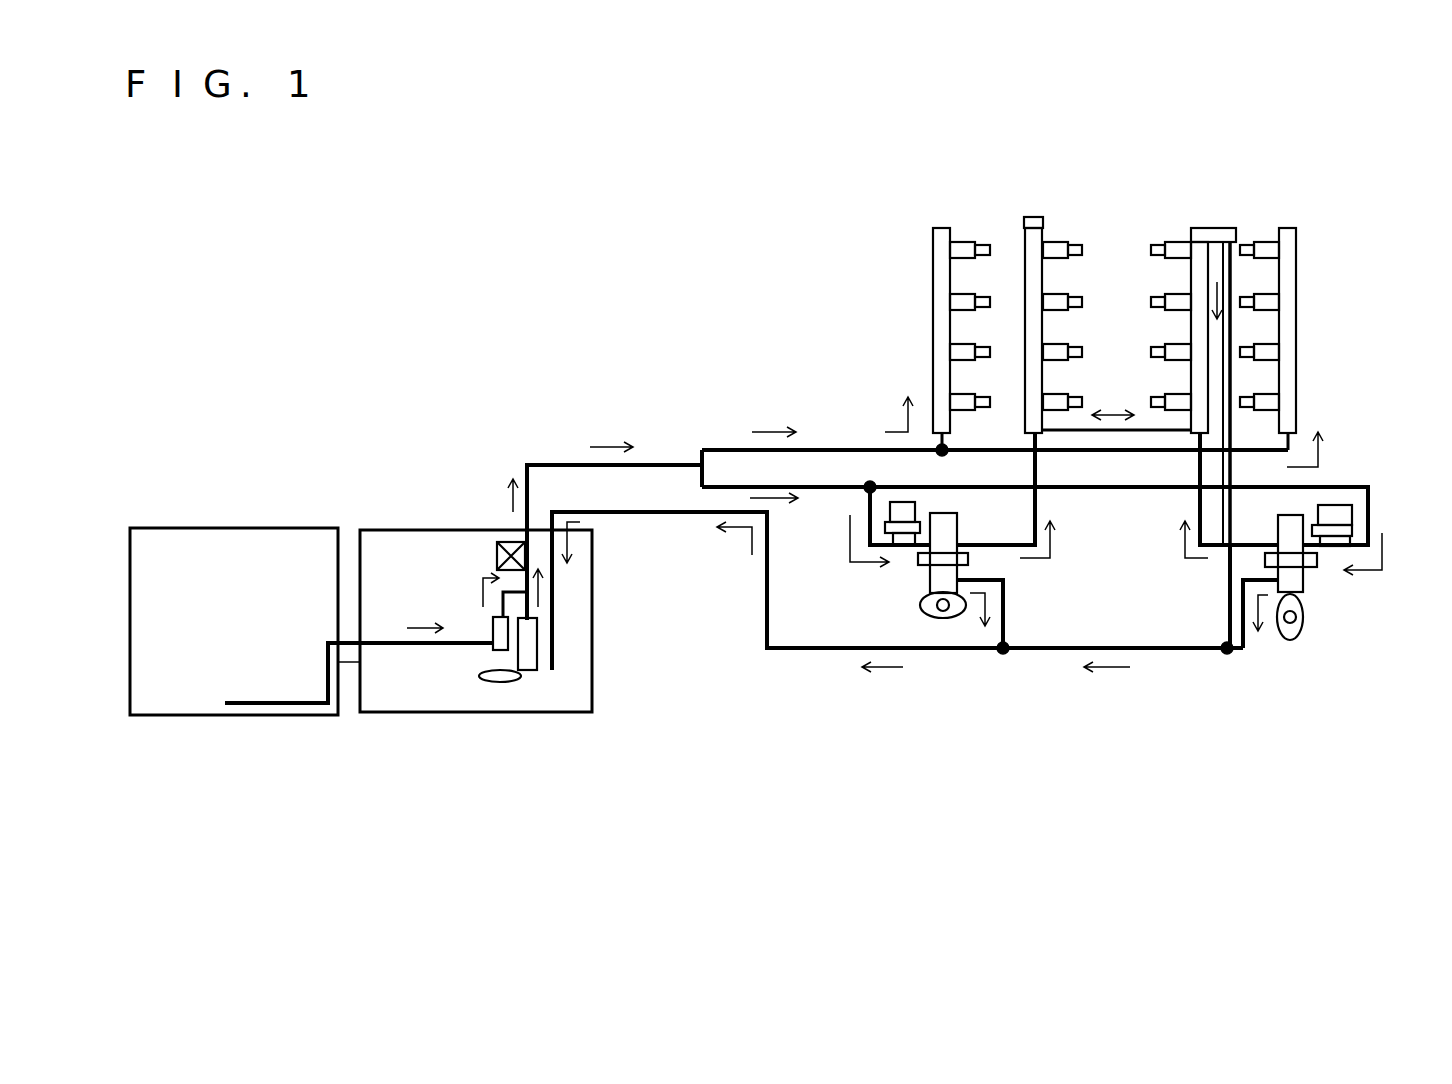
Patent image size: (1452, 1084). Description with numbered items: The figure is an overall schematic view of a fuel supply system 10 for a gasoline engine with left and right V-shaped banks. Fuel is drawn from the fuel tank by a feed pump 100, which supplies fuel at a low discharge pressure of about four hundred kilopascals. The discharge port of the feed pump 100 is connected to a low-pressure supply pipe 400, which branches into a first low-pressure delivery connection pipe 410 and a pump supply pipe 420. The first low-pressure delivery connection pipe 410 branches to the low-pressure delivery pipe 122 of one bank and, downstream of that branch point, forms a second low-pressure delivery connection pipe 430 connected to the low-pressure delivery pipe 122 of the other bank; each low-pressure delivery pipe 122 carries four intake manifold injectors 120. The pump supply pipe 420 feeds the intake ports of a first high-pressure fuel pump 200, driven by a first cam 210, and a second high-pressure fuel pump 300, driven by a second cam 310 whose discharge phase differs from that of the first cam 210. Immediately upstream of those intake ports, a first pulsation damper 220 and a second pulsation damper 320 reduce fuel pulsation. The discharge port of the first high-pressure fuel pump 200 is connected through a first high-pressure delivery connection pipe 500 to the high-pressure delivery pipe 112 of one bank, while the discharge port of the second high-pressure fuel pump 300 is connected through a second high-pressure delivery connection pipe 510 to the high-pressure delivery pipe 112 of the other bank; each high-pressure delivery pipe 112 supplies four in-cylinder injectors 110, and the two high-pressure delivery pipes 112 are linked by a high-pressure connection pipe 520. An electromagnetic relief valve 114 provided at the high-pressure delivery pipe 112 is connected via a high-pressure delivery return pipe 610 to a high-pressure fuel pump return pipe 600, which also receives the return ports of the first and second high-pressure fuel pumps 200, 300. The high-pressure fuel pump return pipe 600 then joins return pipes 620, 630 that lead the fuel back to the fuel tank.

The fuel supply system 10 is at (637, 322).
The feed pump 100 is at (527, 668).
The in-cylinder injector 110 is at (1172, 240).
The high-pressure delivery pipe 112 is at (1030, 240).
The electromagnetic relief valve 114 is at (1227, 240).
The intake manifold injector 120 is at (965, 248).
The low-pressure delivery pipe 122 is at (934, 242).
The first high-pressure fuel pump 200 is at (938, 578).
The first cam 210 is at (925, 612).
The first pulsation damper 220 is at (920, 520).
The second high-pressure fuel pump 300 is at (1305, 583).
The second cam 310 is at (1298, 627).
The second pulsation damper 320 is at (1355, 518).
The low-pressure supply pipe 400 is at (562, 465).
The first low-pressure delivery connection pipe 410 is at (815, 449).
The pump supply pipe 420 is at (775, 484).
The second low-pressure delivery connection pipe 430 is at (1085, 455).
The first high-pressure delivery connection pipe 500 is at (1040, 520).
The second high-pressure delivery connection pipe 510 is at (1197, 520).
The high-pressure connection pipe 520 is at (1140, 425).
The high-pressure fuel pump return pipe 600 is at (1005, 600).
The high-pressure delivery return pipe 610 is at (1222, 600).
The return pipe 620 is at (1170, 652).
The return pipe 630 is at (935, 652).